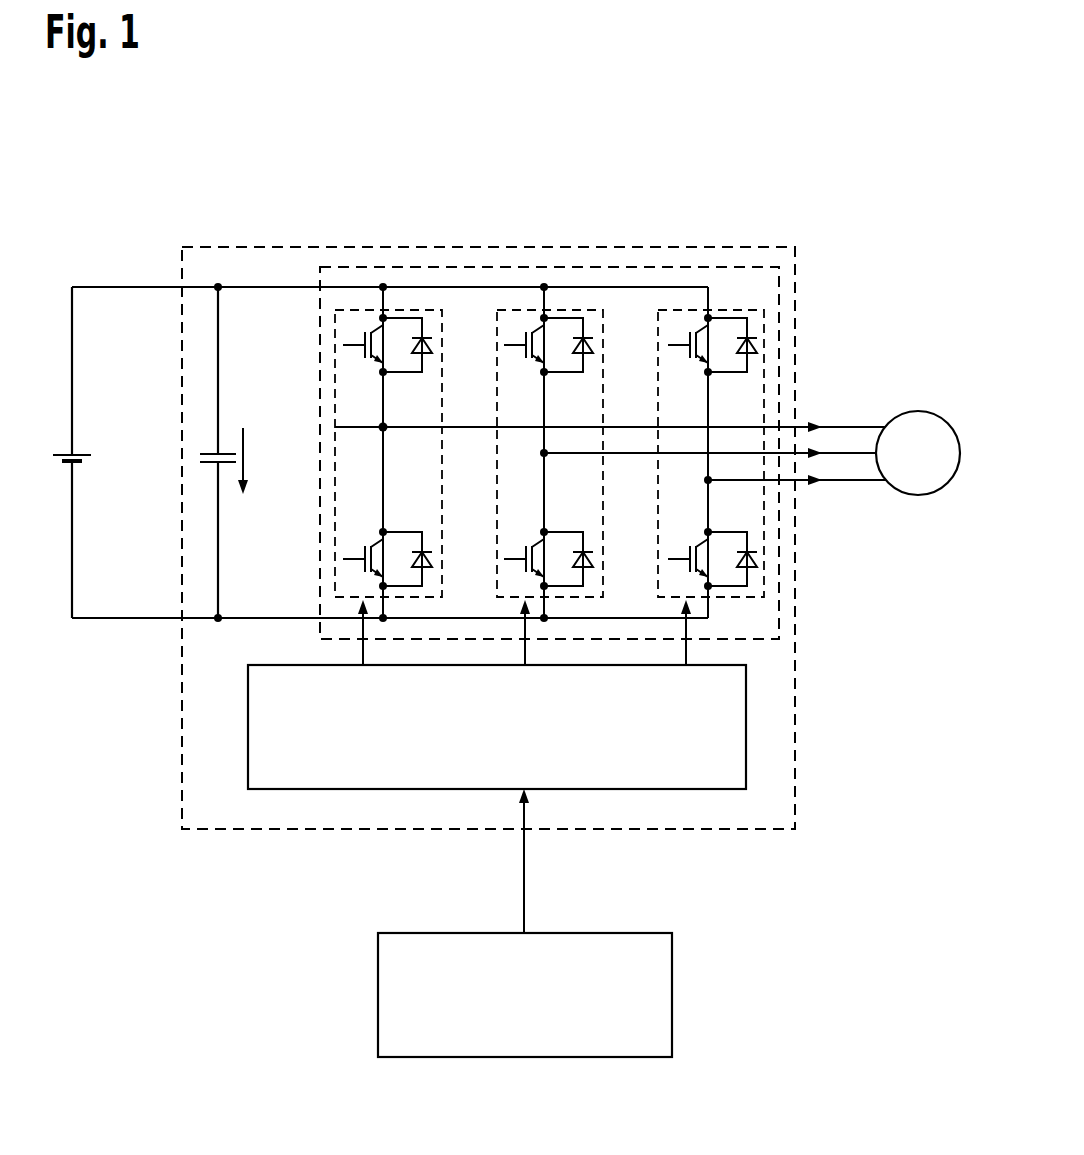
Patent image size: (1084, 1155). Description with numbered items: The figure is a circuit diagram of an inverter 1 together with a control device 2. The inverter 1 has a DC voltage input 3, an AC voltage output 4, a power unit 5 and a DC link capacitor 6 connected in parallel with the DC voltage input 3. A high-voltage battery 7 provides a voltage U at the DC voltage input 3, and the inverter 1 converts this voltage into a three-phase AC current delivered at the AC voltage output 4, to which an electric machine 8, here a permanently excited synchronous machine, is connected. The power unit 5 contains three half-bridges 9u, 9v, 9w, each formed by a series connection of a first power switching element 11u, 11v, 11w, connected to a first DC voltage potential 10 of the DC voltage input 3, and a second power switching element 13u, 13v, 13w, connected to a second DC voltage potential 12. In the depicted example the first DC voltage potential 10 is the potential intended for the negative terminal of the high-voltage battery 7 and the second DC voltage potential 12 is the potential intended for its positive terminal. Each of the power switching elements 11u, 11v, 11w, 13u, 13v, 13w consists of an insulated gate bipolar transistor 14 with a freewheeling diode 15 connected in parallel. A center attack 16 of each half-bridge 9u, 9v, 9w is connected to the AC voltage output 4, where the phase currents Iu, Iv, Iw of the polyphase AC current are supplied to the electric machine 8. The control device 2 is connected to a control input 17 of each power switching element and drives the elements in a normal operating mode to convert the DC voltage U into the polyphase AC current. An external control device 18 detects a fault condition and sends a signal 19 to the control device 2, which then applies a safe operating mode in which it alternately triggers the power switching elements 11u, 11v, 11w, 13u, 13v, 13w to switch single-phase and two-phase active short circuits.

The inverter 1 is at (643, 247).
The control device 2 is at (746, 723).
The DC voltage input 3 is at (202, 296).
The AC voltage output 4 is at (783, 256).
The power unit 5 is at (478, 267).
The DC link capacitor 6 is at (202, 452).
The high-voltage battery 7 is at (62, 452).
The electric machine 8 is at (918, 411).
The half-bridge 9u is at (410, 308).
The half-bridge 9v is at (572, 308).
The half-bridge 9w is at (732, 308).
The first DC voltage potential 10 is at (288, 618).
The first power switching element 11u is at (393, 545).
The first power switching element 11v is at (550, 512).
The first power switching element 11w is at (711, 512).
The second DC voltage potential 12 is at (277, 287).
The second power switching element 13u is at (393, 355).
The second power switching element 13v is at (554, 355).
The second power switching element 13w is at (718, 355).
The insulated gate bipolar transistor 14 is at (365, 546).
The freewheeling diode 15 is at (425, 555).
The center attack 16 is at (383, 427).
The control input 17 is at (345, 559).
The external control device 18 is at (672, 995).
The signal 19 is at (525, 870).
The voltage U is at (250, 445).
The phase current Iu is at (823, 427).
The phase current Iv is at (823, 453).
The phase current Iw is at (823, 482).